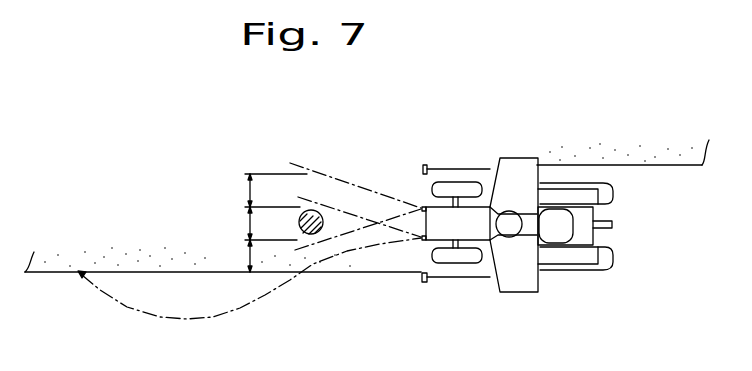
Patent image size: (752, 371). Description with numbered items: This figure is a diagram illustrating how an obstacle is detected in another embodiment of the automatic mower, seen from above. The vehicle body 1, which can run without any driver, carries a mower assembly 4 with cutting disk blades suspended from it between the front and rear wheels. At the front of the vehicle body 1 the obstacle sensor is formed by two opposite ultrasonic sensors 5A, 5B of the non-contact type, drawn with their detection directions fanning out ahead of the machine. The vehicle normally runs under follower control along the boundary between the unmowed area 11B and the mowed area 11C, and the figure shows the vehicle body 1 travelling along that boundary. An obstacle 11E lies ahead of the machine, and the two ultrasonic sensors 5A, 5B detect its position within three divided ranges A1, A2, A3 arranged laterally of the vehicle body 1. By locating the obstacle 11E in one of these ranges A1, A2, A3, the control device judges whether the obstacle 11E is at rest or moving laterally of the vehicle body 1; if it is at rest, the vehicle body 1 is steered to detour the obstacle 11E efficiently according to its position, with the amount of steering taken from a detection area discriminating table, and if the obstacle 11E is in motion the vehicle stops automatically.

The vehicle body 1 is at (467, 199).
The mower assembly 4 is at (517, 158).
The ultrasonic sensor 5A is at (421, 241).
The ultrasonic sensor 5B is at (421, 206).
The unmowed area 11B is at (188, 207).
The mowed area 11C is at (368, 353).
The obstacle 11E is at (300, 219).
The obstacle position range A1 is at (256, 256).
The obstacle position range A2 is at (261, 223).
The obstacle position range A3 is at (264, 190).